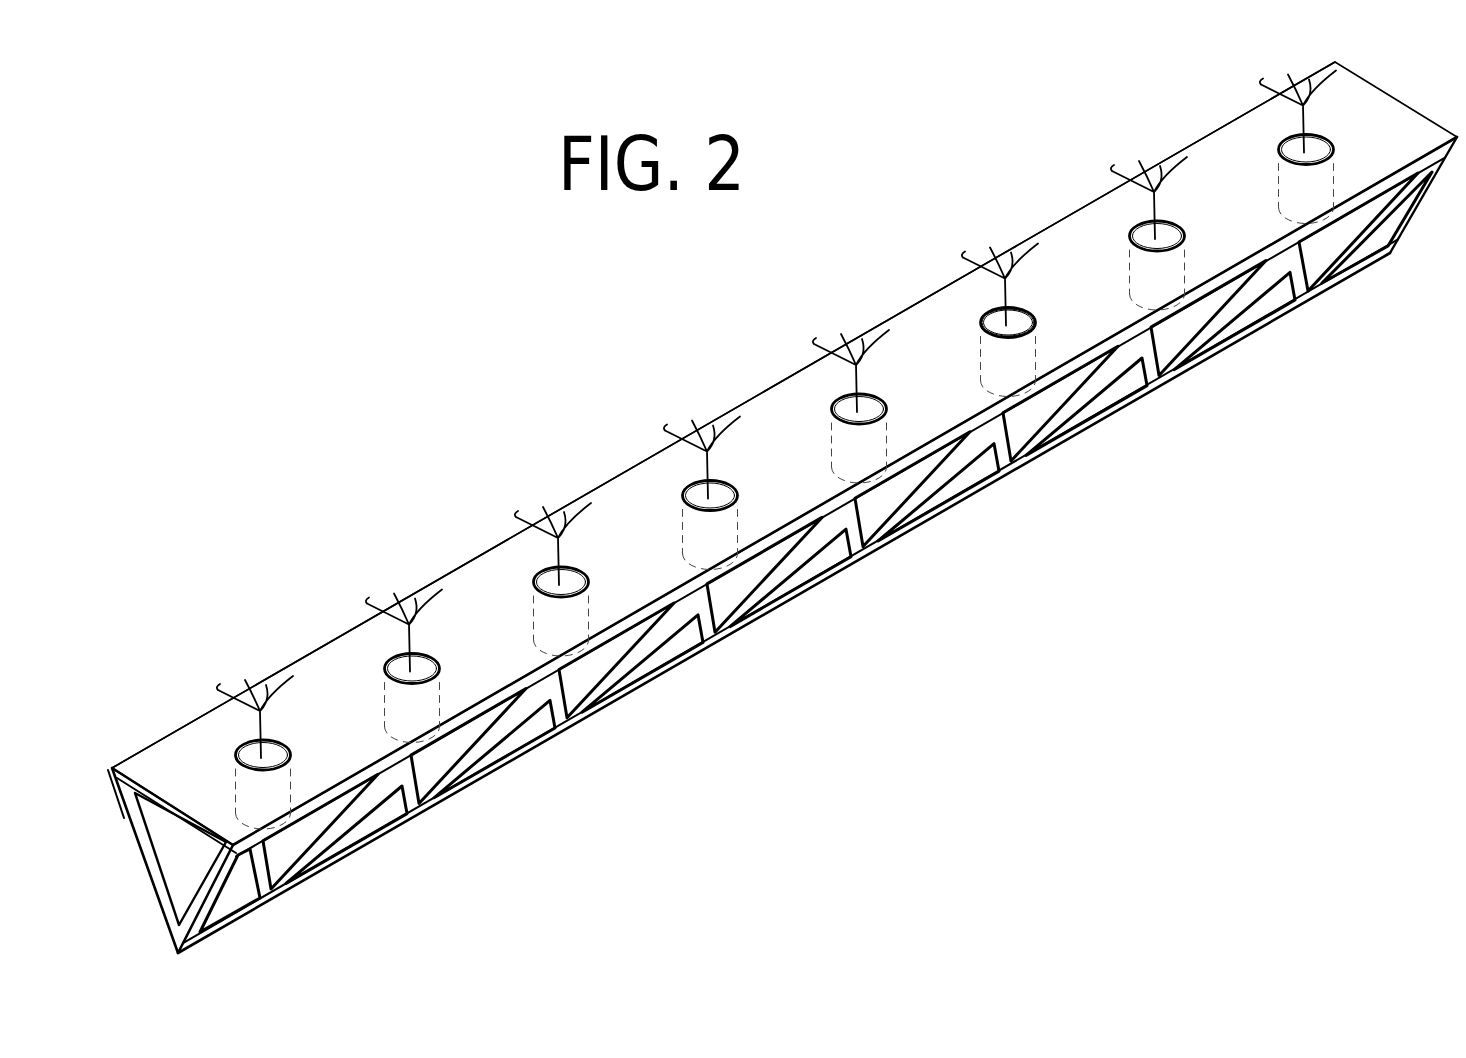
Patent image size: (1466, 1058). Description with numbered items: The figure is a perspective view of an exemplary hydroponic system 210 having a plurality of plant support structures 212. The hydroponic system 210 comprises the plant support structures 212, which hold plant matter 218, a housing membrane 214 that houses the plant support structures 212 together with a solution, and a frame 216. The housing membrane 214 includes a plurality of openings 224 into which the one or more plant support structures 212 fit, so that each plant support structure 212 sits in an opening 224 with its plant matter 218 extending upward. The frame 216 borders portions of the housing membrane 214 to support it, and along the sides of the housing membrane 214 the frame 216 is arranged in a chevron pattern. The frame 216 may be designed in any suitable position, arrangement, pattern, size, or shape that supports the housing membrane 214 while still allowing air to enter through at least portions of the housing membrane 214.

The hydroponic system 210 is at (578, 428).
The plant support structure 212 is at (385, 698).
The housing membrane 214 is at (1392, 108).
The frame 216 is at (792, 595).
The plant matter 218 is at (420, 590).
The opening 224 is at (985, 308).